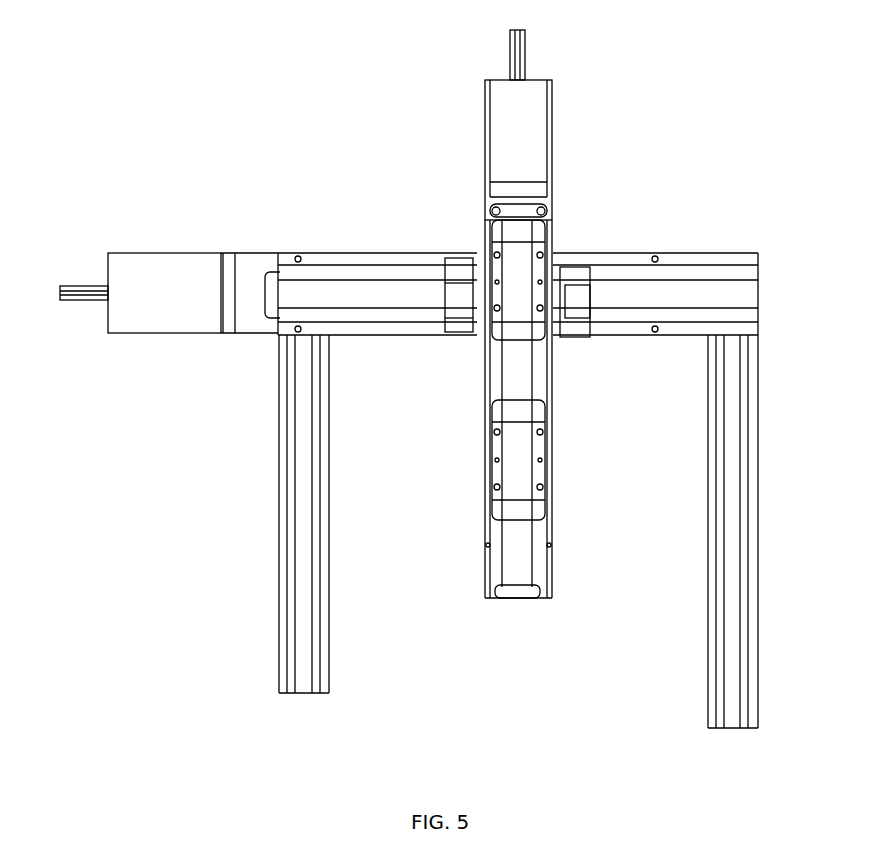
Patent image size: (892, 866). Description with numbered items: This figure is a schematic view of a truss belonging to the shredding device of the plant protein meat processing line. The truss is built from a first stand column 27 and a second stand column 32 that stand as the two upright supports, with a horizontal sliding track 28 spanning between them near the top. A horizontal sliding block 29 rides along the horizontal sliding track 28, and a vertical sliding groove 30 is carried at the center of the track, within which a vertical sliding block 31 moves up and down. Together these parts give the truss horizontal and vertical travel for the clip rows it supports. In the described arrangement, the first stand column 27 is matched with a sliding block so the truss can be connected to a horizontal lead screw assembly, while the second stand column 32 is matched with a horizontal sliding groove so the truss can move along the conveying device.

The first stand column 27 is at (225, 401).
The horizontal sliding track 28 is at (409, 223).
The horizontal sliding block 29 is at (419, 220).
The vertical sliding groove 30 is at (562, 314).
The vertical sliding block 31 is at (649, 436).
The second stand column 32 is at (759, 531).